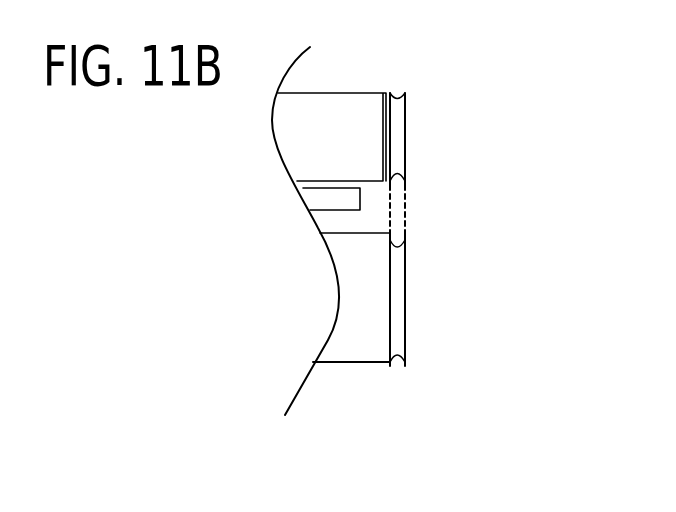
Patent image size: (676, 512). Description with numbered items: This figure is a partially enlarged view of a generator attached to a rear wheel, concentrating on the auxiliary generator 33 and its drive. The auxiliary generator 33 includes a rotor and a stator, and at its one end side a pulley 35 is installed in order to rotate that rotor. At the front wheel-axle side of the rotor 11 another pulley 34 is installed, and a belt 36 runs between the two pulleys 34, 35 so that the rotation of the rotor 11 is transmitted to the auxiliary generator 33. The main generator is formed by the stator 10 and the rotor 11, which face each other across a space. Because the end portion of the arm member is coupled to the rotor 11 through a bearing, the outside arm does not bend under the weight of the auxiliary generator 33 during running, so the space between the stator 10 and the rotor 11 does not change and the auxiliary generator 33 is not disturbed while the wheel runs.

The stator 10 is at (318, 198).
The rotor 11 is at (338, 363).
The auxiliary generator 33 is at (317, 107).
The pulley 34 is at (407, 335).
The pulley 35 is at (408, 137).
The belt 36 is at (407, 225).